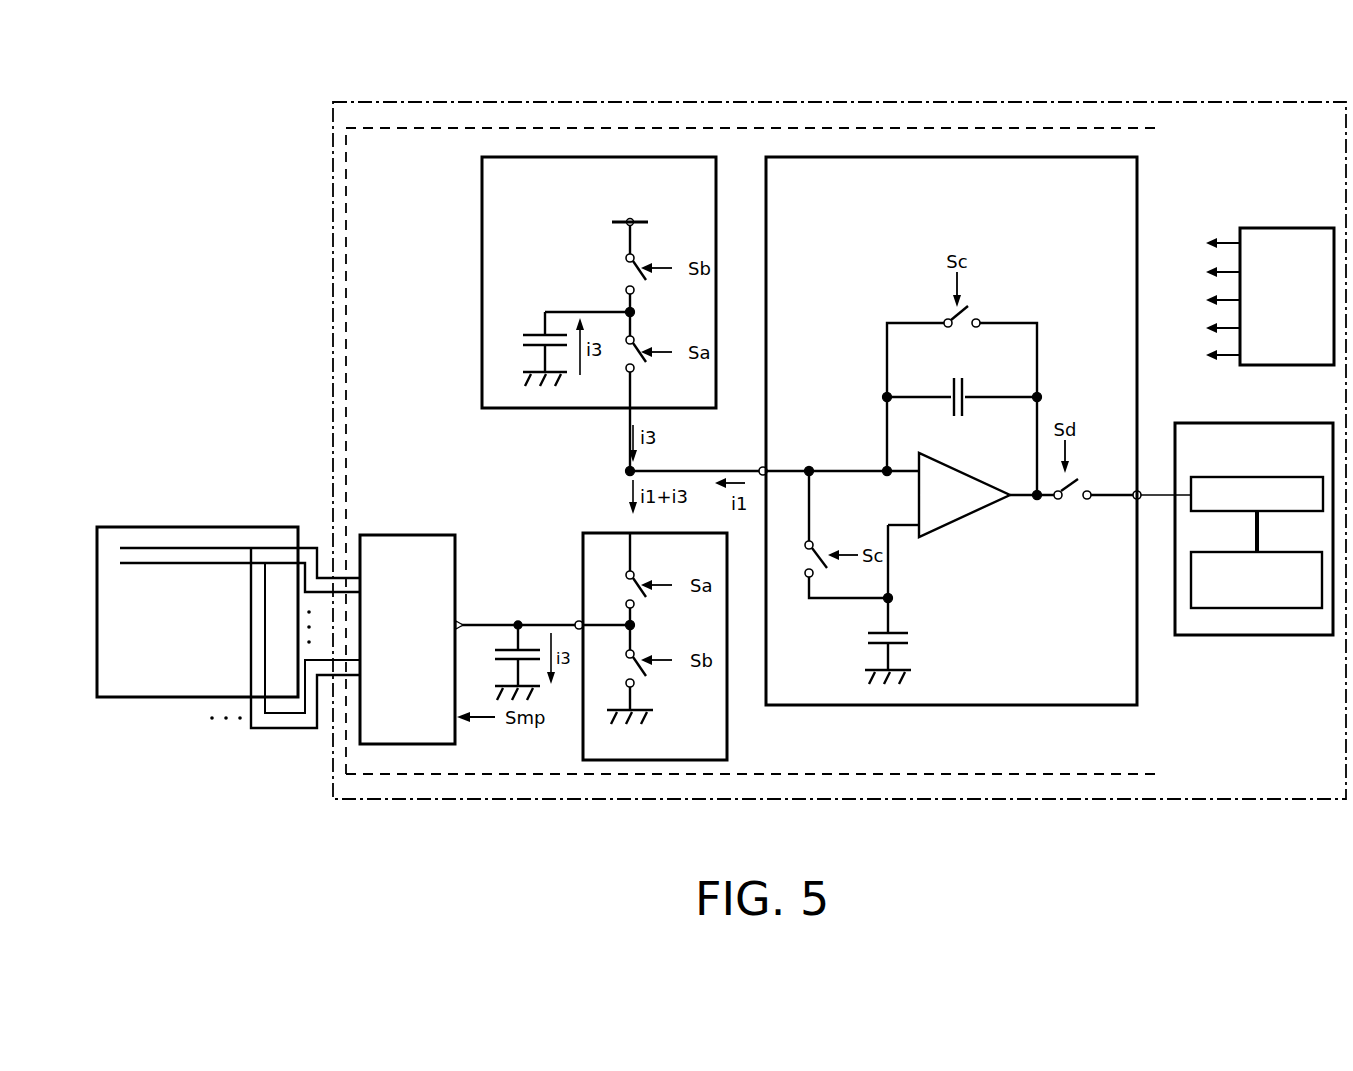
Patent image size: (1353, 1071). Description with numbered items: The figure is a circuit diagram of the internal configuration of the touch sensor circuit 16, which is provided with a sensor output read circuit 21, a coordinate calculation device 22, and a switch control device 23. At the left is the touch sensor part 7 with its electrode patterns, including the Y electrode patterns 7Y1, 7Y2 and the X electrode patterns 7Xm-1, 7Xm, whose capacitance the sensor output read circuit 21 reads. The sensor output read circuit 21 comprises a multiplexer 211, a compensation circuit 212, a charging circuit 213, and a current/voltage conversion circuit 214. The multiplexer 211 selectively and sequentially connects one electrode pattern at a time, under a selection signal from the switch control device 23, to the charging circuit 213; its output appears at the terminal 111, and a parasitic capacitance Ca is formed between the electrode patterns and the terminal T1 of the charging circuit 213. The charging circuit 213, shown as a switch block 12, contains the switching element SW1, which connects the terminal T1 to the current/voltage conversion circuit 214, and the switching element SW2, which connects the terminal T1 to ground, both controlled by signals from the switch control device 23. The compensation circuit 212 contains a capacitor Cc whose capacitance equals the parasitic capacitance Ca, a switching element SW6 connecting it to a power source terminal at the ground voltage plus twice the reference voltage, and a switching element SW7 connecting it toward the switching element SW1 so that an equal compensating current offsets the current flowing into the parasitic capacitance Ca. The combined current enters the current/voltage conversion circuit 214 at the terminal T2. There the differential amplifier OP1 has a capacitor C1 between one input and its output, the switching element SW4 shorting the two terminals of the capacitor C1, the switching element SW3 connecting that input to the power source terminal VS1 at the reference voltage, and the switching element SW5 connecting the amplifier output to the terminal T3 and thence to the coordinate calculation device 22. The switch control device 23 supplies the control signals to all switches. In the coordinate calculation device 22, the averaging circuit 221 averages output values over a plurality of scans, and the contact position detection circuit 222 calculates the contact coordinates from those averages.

The touch sensor circuit 16 is at (1185, 101).
The sensor output read circuit 21 is at (1133, 128).
The touch sensor part 7 is at (195, 527).
The electrode pattern 7Y1 is at (155, 548).
The electrode pattern 7Y2 is at (148, 565).
The electrode pattern 7Xm-1 is at (251, 548).
The electrode pattern 7Xm is at (266, 563).
The multiplexer 211 is at (413, 535).
The terminal 111 is at (462, 622).
The terminal T1 is at (575, 621).
The parasitic capacitance Ca is at (505, 652).
The switch unit 12 is at (583, 548).
The charging circuit 213 is at (605, 760).
The switching element SW1 is at (640, 572).
The switching element SW2 is at (641, 650).
The compensation circuit 212 is at (537, 157).
The switching element SW6 is at (636, 256).
The switching element SW7 is at (636, 336).
The capacitor Cc is at (520, 338).
The terminal T2 is at (760, 466).
The current/voltage conversion circuit 214 is at (840, 157).
The differential amplifier OP1 is at (960, 528).
The switching element SW3 is at (818, 544).
The switching element SW4 is at (982, 318).
The switching element SW5 is at (1092, 492).
The capacitor C1 is at (957, 376).
The power source terminal VS1 is at (912, 645).
The terminal T3 is at (1142, 504).
The switch control device 23 is at (1310, 228).
The coordinate calculation device 22 is at (1254, 512).
The averaging circuit 221 is at (1285, 477).
The contact position detection circuit 222 is at (1285, 552).